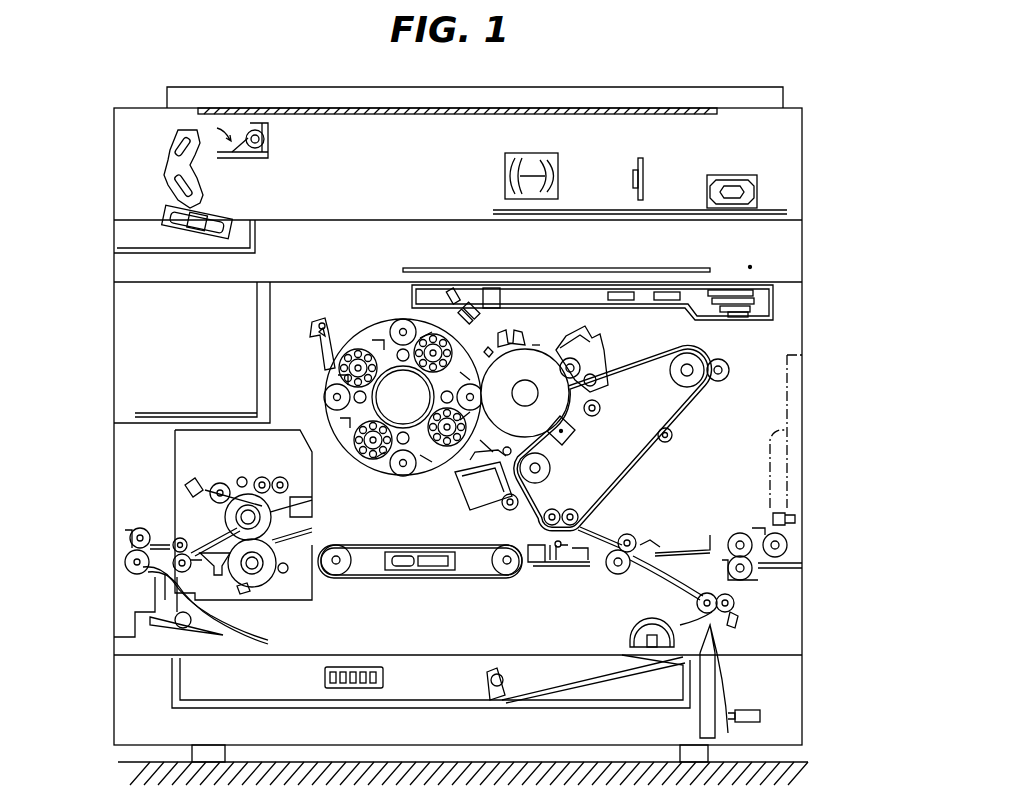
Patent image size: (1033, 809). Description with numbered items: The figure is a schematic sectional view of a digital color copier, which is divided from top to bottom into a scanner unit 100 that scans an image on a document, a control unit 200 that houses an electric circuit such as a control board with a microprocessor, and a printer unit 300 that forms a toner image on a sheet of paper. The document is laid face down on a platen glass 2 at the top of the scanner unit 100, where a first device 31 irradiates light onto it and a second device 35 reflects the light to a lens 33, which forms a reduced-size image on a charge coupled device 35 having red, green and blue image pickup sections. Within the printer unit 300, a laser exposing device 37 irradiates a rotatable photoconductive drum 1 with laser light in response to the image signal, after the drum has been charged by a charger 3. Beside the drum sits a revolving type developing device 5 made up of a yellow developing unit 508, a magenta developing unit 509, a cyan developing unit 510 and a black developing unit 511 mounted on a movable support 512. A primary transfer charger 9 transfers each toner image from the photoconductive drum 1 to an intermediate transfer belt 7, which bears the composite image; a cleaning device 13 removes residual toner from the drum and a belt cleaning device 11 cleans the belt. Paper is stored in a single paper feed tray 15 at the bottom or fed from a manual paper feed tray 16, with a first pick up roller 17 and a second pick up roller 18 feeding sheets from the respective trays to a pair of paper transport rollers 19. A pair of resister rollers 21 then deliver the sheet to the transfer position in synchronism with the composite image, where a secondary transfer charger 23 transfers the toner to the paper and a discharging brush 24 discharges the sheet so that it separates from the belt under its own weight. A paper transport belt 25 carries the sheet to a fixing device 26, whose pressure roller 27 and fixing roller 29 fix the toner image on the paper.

The photoconductive drum 1 is at (565, 408).
The platen glass 2 is at (683, 108).
The charger 3 is at (517, 330).
The revolving type developing device 5 is at (344, 409).
The intermediate transfer belt 7 is at (688, 424).
The primary transfer charger 9 is at (563, 442).
The belt cleaning device 11 is at (485, 497).
The cleaning device 13 is at (595, 346).
The paper feed tray 15 is at (205, 686).
The manual paper feed tray 16 is at (797, 380).
The first pick up roller 17 is at (675, 645).
The second pick up roller 18 is at (760, 568).
The paper transport rollers 19 is at (728, 604).
The resister rollers 21 is at (633, 535).
The secondary transfer charger 23 is at (563, 568).
The discharging brush 24 is at (535, 568).
The paper transport belt 25 is at (442, 578).
The fixing device 26 is at (175, 462).
The pressure roller 27 is at (758, 232).
The fixing roller 29 is at (240, 517).
The first device 31 is at (270, 138).
The lens 33 is at (505, 178).
The second device 35 is at (190, 167).
The laser exposing device 37 is at (715, 292).
The scanner unit 100 is at (88, 144).
The control unit 200 is at (88, 259).
The printer unit 300 is at (88, 364).
The yellow developing unit 508 is at (433, 330).
The magenta developing unit 509 is at (330, 372).
The cyan developing unit 510 is at (362, 452).
The black developing unit 511 is at (428, 452).
The movable support 512 is at (423, 411).